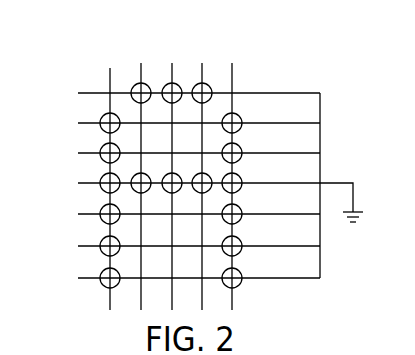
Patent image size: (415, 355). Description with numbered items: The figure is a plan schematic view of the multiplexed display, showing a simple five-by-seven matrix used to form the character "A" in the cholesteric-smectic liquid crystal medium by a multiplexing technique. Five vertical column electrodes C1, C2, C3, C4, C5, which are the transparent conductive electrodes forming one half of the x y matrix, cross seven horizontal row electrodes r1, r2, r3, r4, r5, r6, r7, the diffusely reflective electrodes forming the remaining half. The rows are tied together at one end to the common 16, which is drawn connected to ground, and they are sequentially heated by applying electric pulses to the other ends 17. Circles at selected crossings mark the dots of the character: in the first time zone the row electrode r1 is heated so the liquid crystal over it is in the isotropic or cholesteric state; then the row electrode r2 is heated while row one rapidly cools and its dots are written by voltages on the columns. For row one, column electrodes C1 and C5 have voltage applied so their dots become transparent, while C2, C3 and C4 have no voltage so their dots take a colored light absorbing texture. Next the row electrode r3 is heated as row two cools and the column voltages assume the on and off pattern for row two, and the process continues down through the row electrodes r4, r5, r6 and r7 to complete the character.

The common 16 is at (333, 182).
The other ends 17 is at (179, 267).
The column electrode C1 is at (108, 167).
The column electrode C2 is at (140, 167).
The column electrode C3 is at (172, 167).
The column electrode C4 is at (202, 167).
The column electrode C5 is at (234, 167).
The row electrode r1 is at (179, 93).
The row electrode r2 is at (179, 123).
The row electrode r3 is at (179, 153).
The row electrode r4 is at (179, 184).
The row electrode r5 is at (179, 214).
The row electrode r6 is at (179, 246).
The row electrode r7 is at (88, 246).